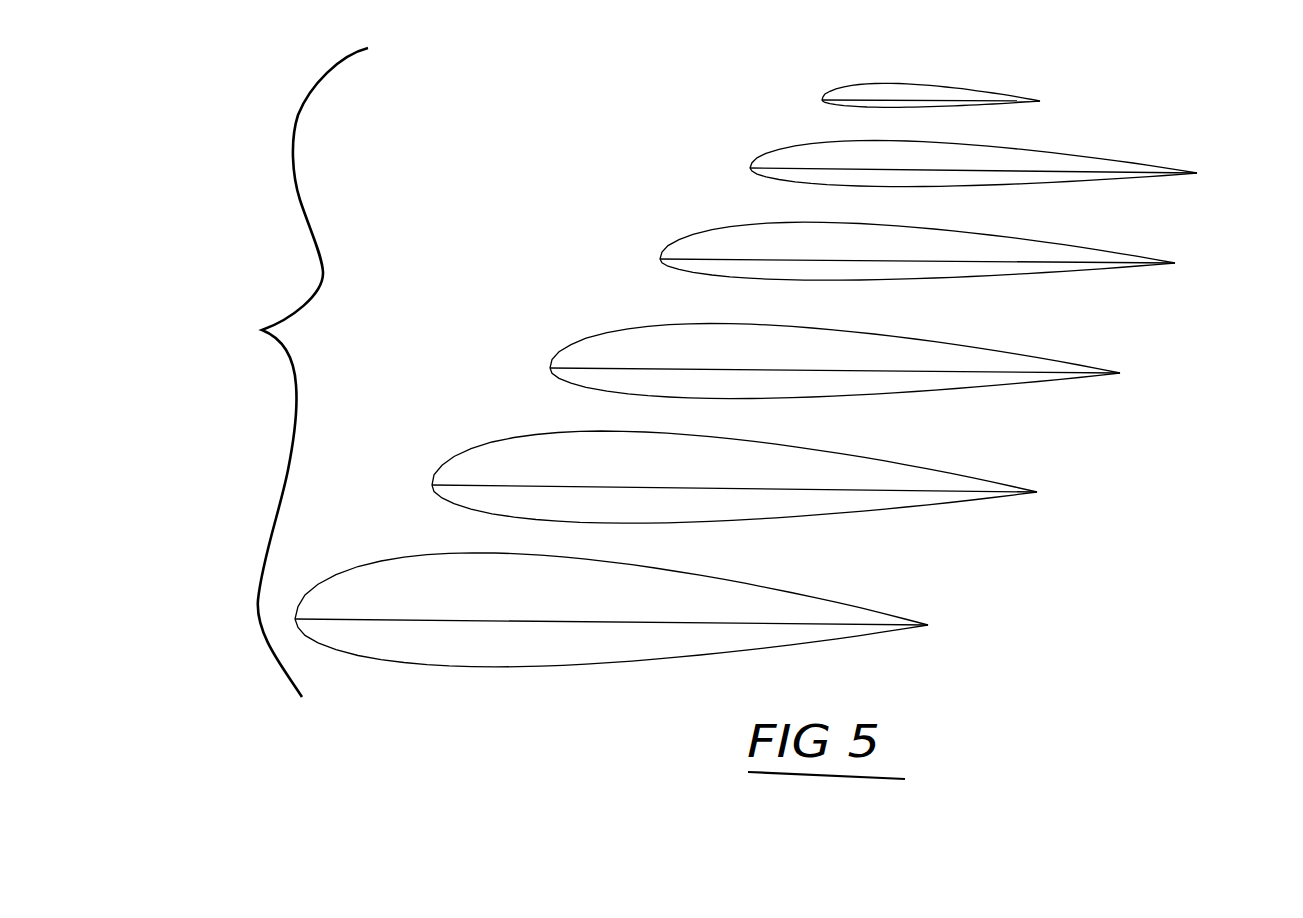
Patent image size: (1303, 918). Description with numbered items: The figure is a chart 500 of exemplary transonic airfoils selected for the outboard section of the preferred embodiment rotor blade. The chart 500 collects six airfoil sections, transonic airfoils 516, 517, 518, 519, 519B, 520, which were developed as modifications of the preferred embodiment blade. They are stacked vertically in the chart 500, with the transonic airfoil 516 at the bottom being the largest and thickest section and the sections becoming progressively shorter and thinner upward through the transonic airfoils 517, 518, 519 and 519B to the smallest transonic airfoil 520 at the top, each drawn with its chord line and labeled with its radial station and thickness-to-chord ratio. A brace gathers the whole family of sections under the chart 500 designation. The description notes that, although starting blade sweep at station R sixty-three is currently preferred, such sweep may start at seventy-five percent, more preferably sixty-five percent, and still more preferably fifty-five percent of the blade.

The chart 500 is at (274, 372).
The transonic airfoil 516 is at (888, 605).
The transonic airfoil 517 is at (978, 472).
The transonic airfoil 518 is at (1053, 354).
The transonic airfoil 519 is at (1120, 250).
The transonic airfoil 519B is at (1147, 157).
The transonic airfoil 520 is at (1017, 94).